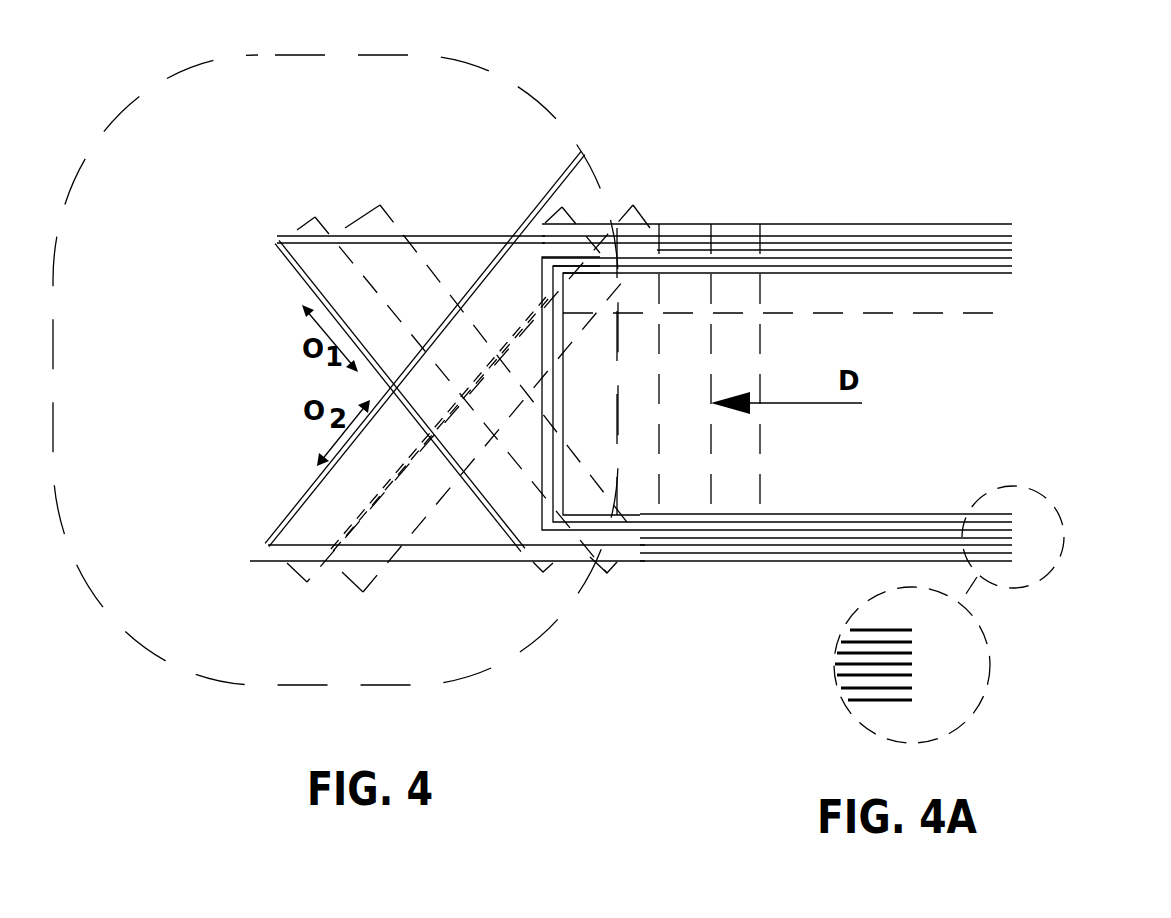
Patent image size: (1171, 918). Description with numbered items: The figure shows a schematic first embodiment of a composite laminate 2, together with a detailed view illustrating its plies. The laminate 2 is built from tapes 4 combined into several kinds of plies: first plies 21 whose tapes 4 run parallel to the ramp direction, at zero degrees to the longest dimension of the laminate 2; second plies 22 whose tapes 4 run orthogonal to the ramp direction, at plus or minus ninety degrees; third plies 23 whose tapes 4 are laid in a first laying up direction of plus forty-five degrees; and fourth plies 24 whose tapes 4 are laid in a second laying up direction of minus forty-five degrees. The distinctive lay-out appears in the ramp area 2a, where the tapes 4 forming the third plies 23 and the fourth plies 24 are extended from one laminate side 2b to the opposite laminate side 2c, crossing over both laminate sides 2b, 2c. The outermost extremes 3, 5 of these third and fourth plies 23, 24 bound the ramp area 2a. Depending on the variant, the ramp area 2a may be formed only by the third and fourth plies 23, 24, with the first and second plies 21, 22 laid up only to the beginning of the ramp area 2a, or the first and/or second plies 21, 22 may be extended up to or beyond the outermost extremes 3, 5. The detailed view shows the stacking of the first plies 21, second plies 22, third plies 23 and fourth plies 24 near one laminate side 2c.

In FIG. 4, the composite laminate 2 is at (965, 393).
In FIG. 4, the ramp area 2a is at (457, 268).
In FIG. 4, the laminate side 2b is at (1042, 246).
In FIG. 4, the opposite laminate side 2c is at (1078, 537).
In FIG. 4, the outermost extreme 3 is at (277, 242).
In FIG. 4, the tape 4 is at (318, 222).
In FIG. 4, the outermost extreme 5 is at (267, 545).
In FIG. 4A, the first plies 21 is at (893, 628).
In FIG. 4A, the second plies 22 is at (913, 653).
In FIG. 4, the third plies 23 is at (583, 155).
In FIG. 4A, the third plies 23 is at (913, 675).
In FIG. 4, the fourth plies 24 is at (478, 547).
In FIG. 4A, the fourth plies 24 is at (913, 665).